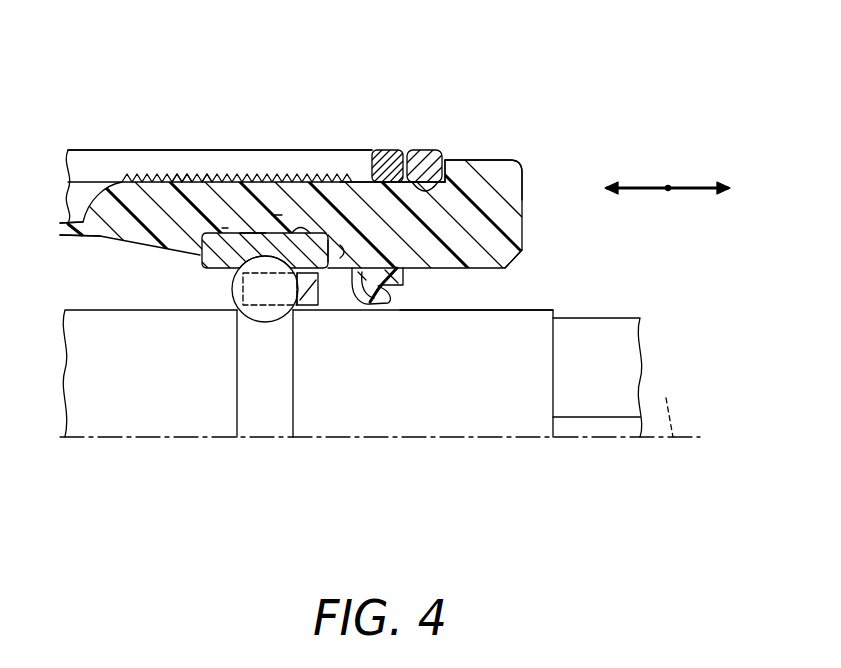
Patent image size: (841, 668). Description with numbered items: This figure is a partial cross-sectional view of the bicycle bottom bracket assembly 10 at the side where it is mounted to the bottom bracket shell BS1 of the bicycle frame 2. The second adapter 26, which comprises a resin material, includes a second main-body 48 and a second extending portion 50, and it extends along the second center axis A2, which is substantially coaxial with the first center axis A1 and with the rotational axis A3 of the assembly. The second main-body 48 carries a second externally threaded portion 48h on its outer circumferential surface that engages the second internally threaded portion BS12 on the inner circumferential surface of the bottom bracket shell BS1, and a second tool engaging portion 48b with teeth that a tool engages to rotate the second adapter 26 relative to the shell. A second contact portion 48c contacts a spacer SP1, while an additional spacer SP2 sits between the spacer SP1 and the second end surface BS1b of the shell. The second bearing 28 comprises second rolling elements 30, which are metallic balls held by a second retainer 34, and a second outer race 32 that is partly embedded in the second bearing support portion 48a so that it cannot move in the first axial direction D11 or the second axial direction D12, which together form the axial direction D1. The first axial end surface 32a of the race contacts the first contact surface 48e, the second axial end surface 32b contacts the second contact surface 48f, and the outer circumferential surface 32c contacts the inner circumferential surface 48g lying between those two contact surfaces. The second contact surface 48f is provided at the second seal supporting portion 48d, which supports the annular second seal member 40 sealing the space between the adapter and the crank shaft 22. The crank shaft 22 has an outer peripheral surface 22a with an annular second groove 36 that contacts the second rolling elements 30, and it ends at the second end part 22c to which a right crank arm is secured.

The bicycle frame 2 is at (76, 141).
The bicycle bottom bracket assembly 10 is at (529, 79).
The crank shaft 22 is at (585, 276).
The outer peripheral surface 22a is at (528, 322).
The second end part 22c is at (608, 330).
The second adapter 26 is at (175, 63).
The second bearing 28 is at (102, 248).
The second rolling elements 30 is at (240, 285).
The second outer race 32 is at (189, 270).
The first axial end surface 32a is at (207, 181).
The second axial end surface 32b is at (333, 248).
The outer circumferential surface 32c is at (253, 233).
The second retainer 34 is at (243, 303).
The second groove 36 is at (237, 412).
The second seal member 40 is at (425, 300).
The second main-body 48 is at (128, 195).
The second bearing support portion 48a is at (276, 215).
The second tool engaging portion 48b is at (493, 170).
The second contact portion 48c is at (452, 164).
The second seal supporting portion 48d is at (392, 247).
The first contact surface 48e is at (225, 232).
The second contact surface 48f is at (336, 250).
The inner circumferential surface 48g is at (303, 232).
The second externally threaded portion 48h is at (345, 238).
The second extending portion 50 is at (124, 182).
The bottom bracket shell BS1 is at (85, 150).
The second internally threaded portion BS12 is at (182, 181).
The second end surface BS1b is at (378, 182).
The spacer SP1 is at (428, 150).
The additional spacer SP2 is at (390, 150).
The axial direction D1 is at (715, 137).
The first axial direction D11 is at (635, 188).
The second axial direction D12 is at (703, 188).
The first center axis A1 is at (692, 362).
The second center axis A2 is at (665, 395).
The rotational axis A3 is at (687, 397).